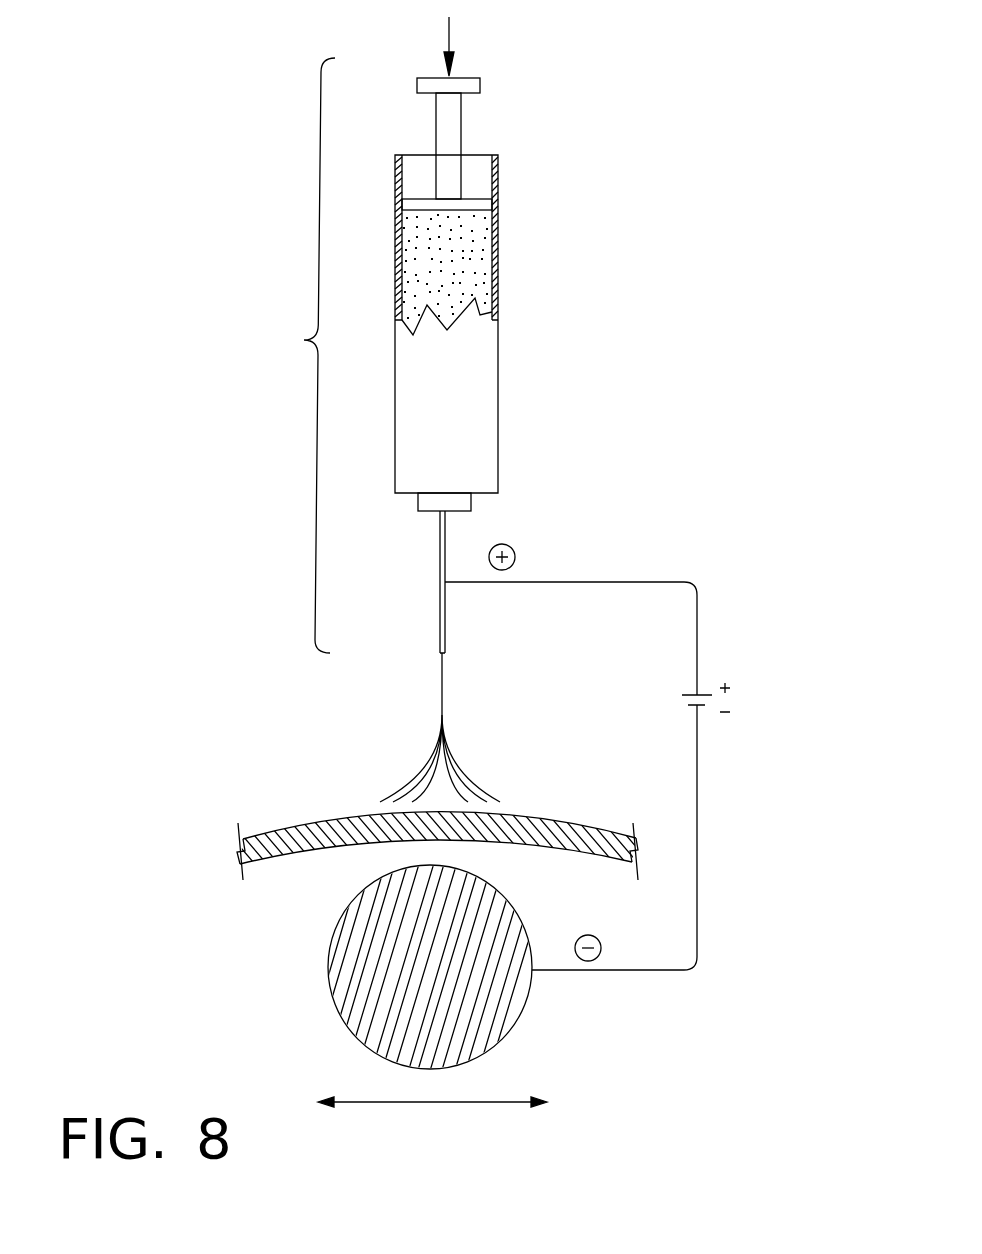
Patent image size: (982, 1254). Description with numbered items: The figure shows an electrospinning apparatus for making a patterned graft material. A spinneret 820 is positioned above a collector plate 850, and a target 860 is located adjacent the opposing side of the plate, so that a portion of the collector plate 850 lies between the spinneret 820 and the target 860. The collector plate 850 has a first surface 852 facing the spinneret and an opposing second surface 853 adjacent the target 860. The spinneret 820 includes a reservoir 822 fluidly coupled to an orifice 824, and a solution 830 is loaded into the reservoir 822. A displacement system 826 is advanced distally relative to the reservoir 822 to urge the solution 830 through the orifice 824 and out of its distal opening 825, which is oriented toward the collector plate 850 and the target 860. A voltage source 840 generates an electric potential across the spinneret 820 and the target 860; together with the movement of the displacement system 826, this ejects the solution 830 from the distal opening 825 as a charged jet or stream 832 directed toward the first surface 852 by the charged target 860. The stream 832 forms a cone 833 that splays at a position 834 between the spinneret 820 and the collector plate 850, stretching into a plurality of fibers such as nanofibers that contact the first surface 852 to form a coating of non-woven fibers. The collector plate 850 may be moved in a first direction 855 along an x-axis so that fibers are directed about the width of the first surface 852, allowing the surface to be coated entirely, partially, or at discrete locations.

The spinneret 820 is at (292, 355).
The reservoir 822 is at (502, 220).
The orifice 824 is at (451, 517).
The distal opening 825 is at (440, 654).
The displacement system 826 is at (462, 145).
The solution 830 is at (467, 297).
The charged jet or stream 832 is at (443, 682).
The cone 833 is at (391, 786).
The splay position 834 is at (446, 716).
The voltage source 840 is at (688, 689).
The collector plate 850 is at (550, 817).
The first surface 852 is at (316, 813).
The second surface 853 is at (301, 861).
The first direction 855 is at (507, 1100).
The target 860 is at (328, 978).